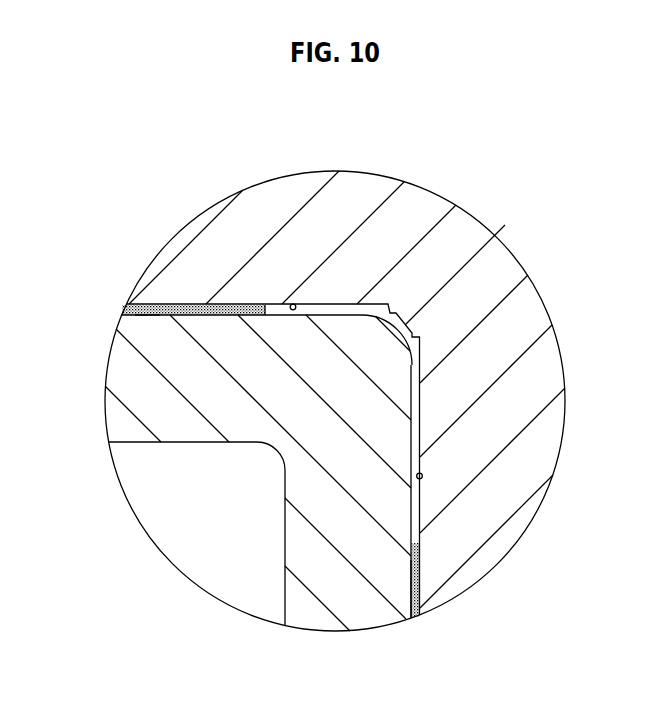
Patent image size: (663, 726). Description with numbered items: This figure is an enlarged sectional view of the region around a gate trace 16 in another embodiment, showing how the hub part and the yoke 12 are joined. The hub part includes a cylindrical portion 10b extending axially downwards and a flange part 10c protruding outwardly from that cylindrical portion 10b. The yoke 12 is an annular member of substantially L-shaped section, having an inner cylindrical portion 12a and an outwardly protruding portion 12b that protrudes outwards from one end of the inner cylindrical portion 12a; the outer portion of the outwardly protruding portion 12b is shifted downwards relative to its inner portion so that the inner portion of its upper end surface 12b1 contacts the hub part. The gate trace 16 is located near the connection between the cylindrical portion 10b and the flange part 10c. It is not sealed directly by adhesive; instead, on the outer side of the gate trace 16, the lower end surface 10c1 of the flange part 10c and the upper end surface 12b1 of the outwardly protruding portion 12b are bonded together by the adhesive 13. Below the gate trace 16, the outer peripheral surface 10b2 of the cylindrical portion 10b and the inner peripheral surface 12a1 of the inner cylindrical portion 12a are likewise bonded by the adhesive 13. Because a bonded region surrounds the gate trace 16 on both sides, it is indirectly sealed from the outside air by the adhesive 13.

The flange part 10c is at (247, 215).
The lower end surface of the flange part 10c1 is at (297, 302).
The adhesive 13 is at (187, 305).
The gate trace 16 is at (390, 337).
The upper end surface of the outwardly protruding portion 12b1 is at (145, 316).
The outer peripheral surface of the cylindrical portion 10b2 is at (425, 475).
The outwardly protruding portion 12b is at (178, 430).
The cylindrical portion 10b is at (497, 510).
The yoke 12 is at (278, 517).
The inner cylindrical portion 12a is at (328, 588).
The inner peripheral surface of the inner cylindrical portion 12a1 is at (388, 596).